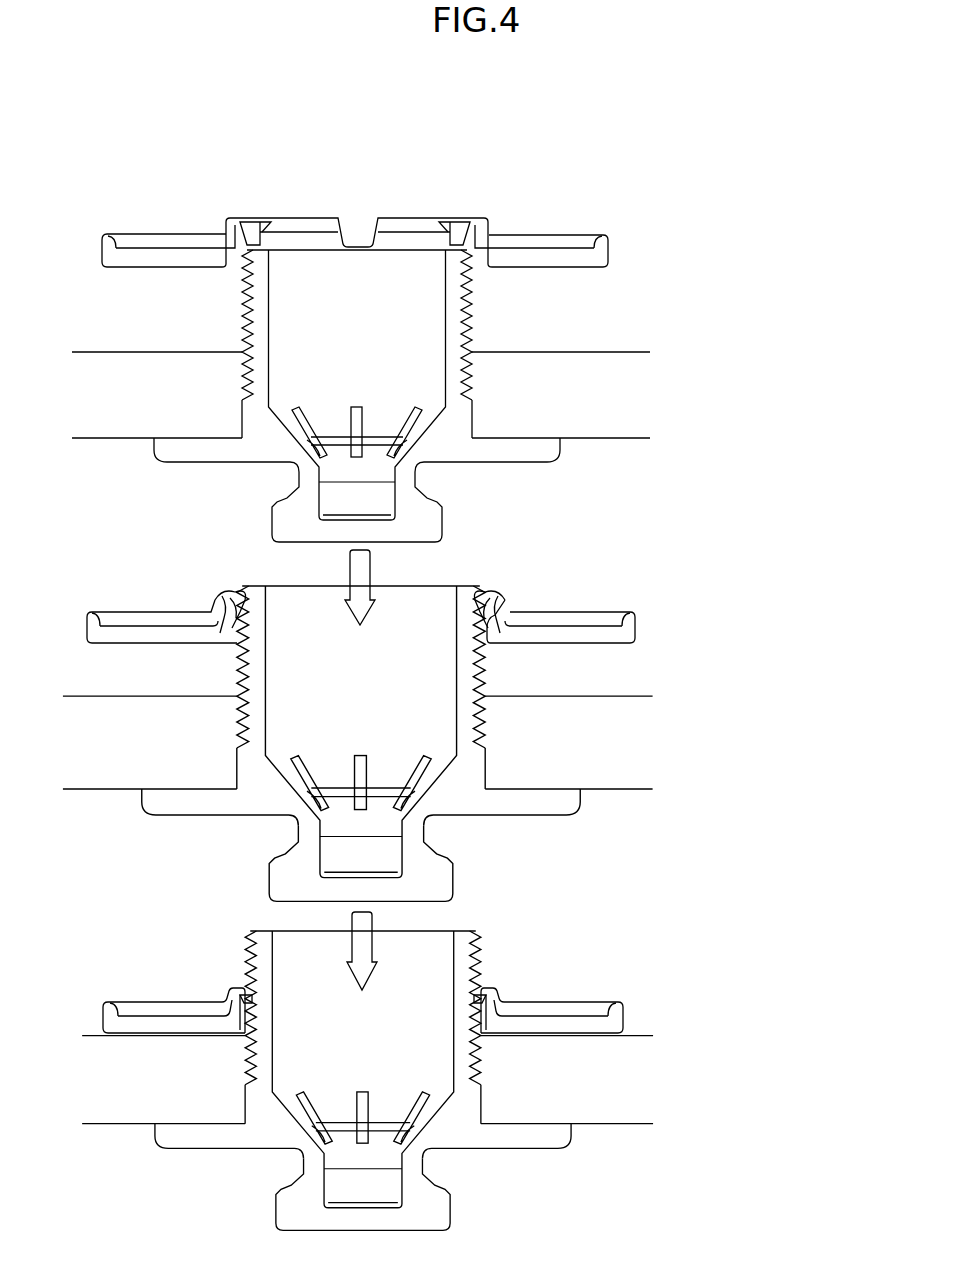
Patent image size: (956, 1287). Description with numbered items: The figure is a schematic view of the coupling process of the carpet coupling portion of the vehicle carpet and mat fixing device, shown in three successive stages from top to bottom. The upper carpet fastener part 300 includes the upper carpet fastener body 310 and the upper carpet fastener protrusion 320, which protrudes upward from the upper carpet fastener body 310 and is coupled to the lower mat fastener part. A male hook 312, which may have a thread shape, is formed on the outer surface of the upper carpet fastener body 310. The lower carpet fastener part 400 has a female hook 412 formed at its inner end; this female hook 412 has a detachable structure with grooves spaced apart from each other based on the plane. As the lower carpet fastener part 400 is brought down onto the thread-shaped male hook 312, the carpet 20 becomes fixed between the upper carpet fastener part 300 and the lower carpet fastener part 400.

The carpet 20 is at (637, 385).
The upper carpet fastener part 300 is at (476, 740).
The upper carpet fastener body 310 is at (573, 1138).
The male hook 312 is at (468, 327).
The upper carpet fastener protrusion 320 is at (447, 1189).
The lower carpet fastener part 400 is at (603, 257).
The female hook 412 is at (474, 228).